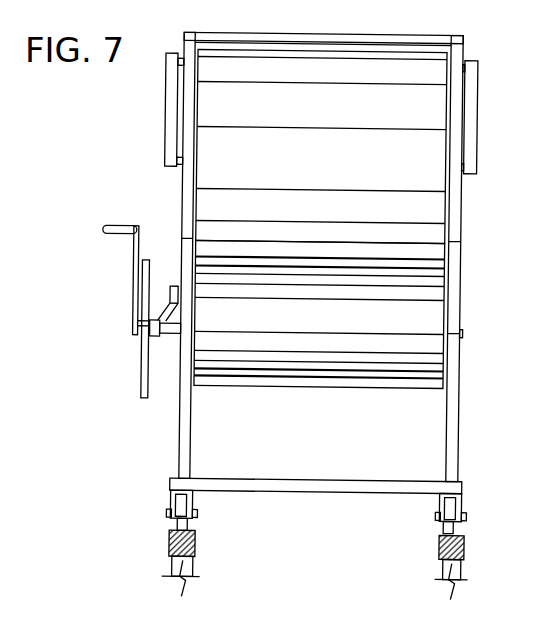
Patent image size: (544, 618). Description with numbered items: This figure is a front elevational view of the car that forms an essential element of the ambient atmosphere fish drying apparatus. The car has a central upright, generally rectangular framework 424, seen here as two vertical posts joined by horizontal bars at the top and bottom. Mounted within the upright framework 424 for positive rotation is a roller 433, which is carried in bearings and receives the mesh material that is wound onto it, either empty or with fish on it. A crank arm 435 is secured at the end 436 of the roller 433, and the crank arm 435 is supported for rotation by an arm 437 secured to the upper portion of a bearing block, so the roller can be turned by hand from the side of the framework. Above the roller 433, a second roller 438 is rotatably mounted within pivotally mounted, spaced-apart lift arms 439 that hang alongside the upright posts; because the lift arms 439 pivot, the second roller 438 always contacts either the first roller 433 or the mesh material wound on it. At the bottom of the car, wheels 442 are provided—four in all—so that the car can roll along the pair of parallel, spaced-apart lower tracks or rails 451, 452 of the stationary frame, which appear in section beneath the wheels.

The upright framework 424 is at (177, 181).
The roller 433 is at (336, 330).
The crank arm 435 is at (130, 248).
The end of the roller 436 is at (152, 320).
The arm 437 is at (158, 340).
The second roller 438 is at (323, 176).
The lift arms 439 is at (163, 105).
The wheels 442 is at (442, 527).
The lower track or rail 451 is at (199, 546).
The lower track or rail 452 is at (442, 547).